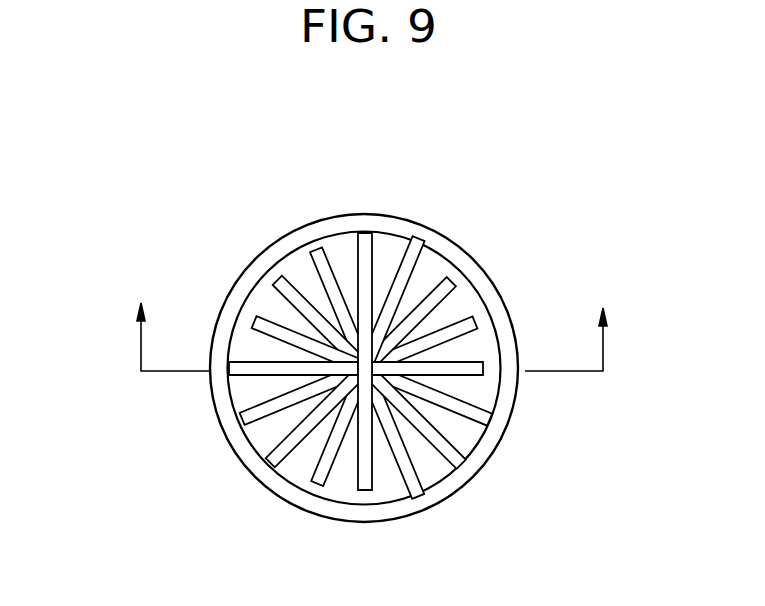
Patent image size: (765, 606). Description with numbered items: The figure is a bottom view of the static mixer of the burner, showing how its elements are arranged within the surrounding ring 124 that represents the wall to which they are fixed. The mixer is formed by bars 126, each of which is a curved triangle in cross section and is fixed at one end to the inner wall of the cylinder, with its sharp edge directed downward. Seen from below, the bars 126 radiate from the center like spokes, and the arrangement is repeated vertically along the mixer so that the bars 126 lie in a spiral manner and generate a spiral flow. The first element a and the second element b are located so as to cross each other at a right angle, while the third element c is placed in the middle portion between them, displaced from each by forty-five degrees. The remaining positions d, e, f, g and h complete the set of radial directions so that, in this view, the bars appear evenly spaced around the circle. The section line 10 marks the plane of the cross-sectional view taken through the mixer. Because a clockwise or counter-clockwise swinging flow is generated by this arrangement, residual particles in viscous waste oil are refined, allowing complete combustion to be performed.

The outer tube / casing 124 is at (243, 289).
The bars 126 is at (457, 253).
The section line 10- 10 is at (371, 318).
The first element a is at (365, 276).
The second element b is at (277, 356).
The third element c is at (300, 435).
The fin d is at (430, 433).
The fin e is at (443, 406).
The fin f is at (398, 281).
The fin g is at (277, 407).
The fin h is at (401, 454).